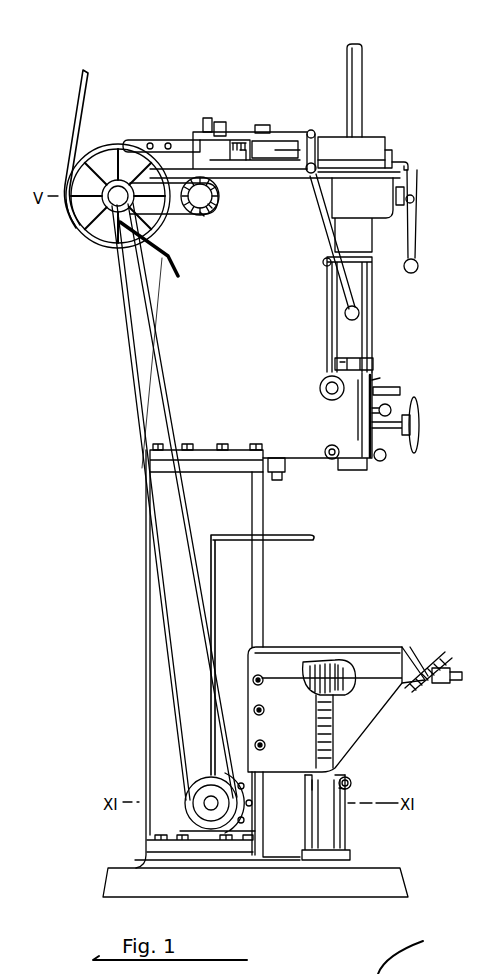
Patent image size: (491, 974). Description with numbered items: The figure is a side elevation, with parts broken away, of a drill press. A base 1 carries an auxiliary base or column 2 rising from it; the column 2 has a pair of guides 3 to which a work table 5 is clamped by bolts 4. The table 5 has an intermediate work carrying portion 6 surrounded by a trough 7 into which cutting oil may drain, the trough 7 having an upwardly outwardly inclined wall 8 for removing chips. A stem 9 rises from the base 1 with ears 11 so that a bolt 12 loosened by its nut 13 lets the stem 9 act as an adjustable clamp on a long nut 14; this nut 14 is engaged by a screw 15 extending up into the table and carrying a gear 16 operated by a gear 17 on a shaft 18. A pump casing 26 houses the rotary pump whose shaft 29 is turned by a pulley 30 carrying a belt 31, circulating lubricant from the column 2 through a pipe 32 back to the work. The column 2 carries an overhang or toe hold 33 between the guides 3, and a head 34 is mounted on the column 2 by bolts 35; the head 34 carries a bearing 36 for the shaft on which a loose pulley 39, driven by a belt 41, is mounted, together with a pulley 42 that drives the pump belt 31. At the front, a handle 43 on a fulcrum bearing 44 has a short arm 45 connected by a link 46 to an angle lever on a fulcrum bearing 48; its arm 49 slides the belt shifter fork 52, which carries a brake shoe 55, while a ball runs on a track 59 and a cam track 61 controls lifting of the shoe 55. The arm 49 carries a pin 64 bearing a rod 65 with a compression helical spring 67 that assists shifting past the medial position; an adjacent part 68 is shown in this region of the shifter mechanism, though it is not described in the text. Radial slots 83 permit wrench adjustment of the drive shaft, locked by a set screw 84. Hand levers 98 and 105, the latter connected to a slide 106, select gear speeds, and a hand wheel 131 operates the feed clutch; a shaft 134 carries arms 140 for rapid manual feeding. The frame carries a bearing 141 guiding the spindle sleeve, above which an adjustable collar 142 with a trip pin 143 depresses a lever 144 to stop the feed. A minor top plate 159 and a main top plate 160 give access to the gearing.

The base 1 is at (370, 870).
The column 2 is at (145, 744).
The guides 3 is at (265, 610).
The bolts 4 is at (264, 718).
The work table 5 is at (253, 691).
The work carrying portion 6 is at (404, 647).
The trough 7 is at (424, 648).
The inclined wall 8 is at (445, 650).
The stem 9 is at (346, 834).
The ears 11 is at (351, 788).
The bolt 12 is at (352, 783).
The nut 13 is at (349, 777).
The long nut 14 is at (311, 774).
The screw 15 is at (318, 718).
The gear 16 is at (312, 688).
The gear 17 is at (334, 688).
The shaft 18 is at (442, 684).
The casing 26 is at (240, 832).
The shaft 29 is at (204, 804).
The pulley 30 is at (204, 825).
The belt 31 is at (128, 384).
The pipe 32 is at (272, 533).
The overhang 33 is at (285, 840).
The head 34 is at (160, 285).
The bolts 35 is at (246, 444).
The bearing 36 is at (77, 208).
The loose pulley 39 is at (112, 146).
The belt 41 is at (85, 109).
The pulley 42 is at (80, 236).
The handle 43 is at (342, 295).
The fulcrum bearing 44 is at (310, 173).
The short arm 45 is at (313, 132).
The link 46 is at (275, 134).
The fulcrum bearing 48 is at (259, 126).
The arm 49 is at (208, 130).
The belt shifter fork 52 is at (180, 140).
The brake shoe 55 is at (140, 140).
The track 59 is at (222, 162).
The track 61 is at (174, 198).
The pin 64 is at (222, 138).
The rod 65 is at (256, 148).
The compression helical spring 67 is at (241, 140).
The lever 68 is at (244, 152).
The radial slots 83 is at (201, 213).
The set screw 84 is at (209, 205).
The hand lever 98 is at (417, 234).
The hand lever 105 is at (440, 198).
The slide 106 is at (422, 154).
The hand wheel 131 is at (418, 420).
The shaft 134 is at (319, 385).
The arms 140 is at (401, 394).
The bearing 141 is at (380, 382).
The adjustable collar 142 is at (374, 363).
The trip pin 143 is at (385, 460).
The lever 144 is at (391, 409).
The minor top plate 159 is at (377, 137).
The main top plate 160 is at (385, 150).